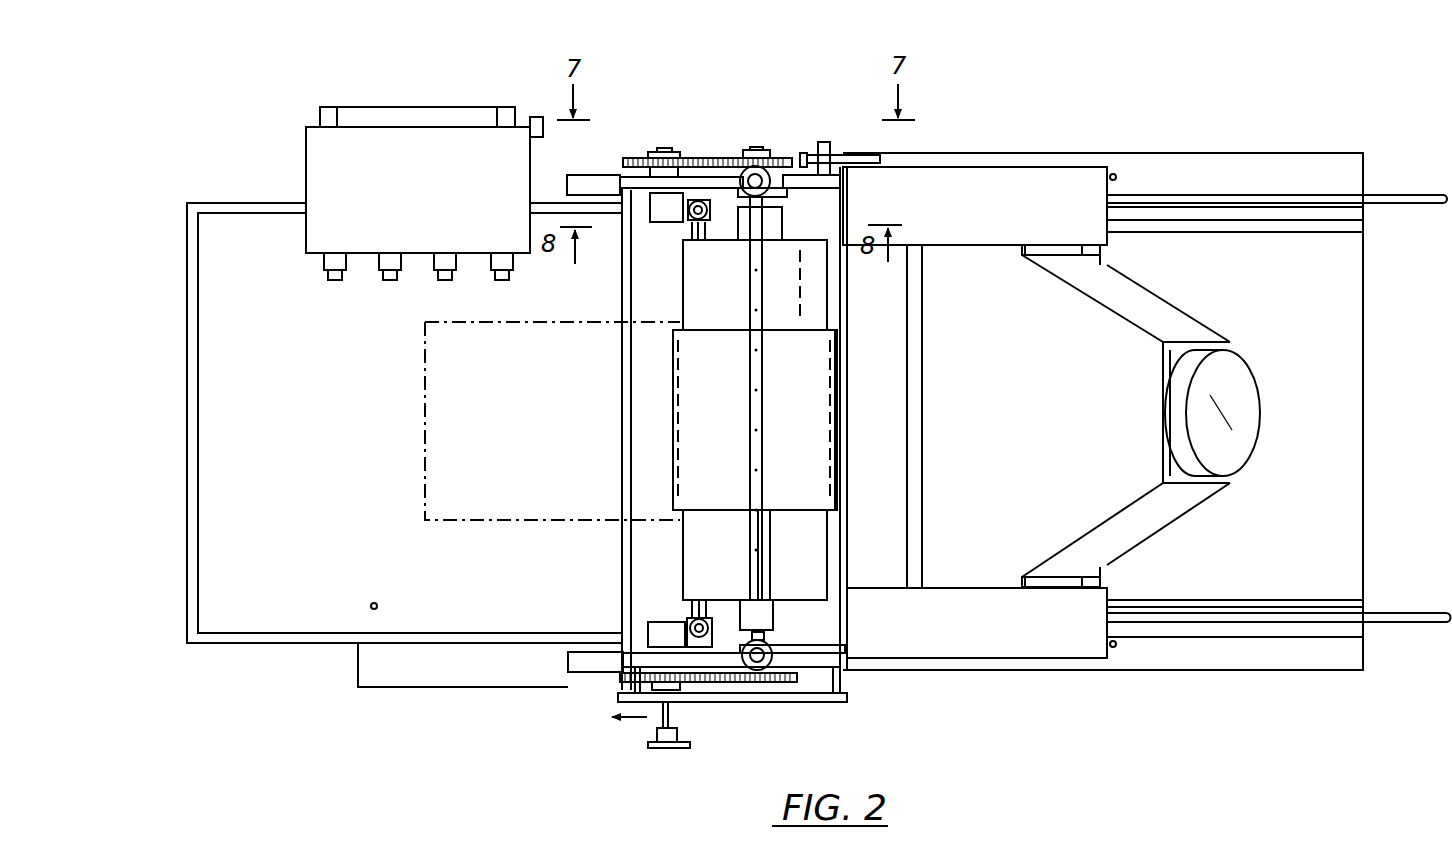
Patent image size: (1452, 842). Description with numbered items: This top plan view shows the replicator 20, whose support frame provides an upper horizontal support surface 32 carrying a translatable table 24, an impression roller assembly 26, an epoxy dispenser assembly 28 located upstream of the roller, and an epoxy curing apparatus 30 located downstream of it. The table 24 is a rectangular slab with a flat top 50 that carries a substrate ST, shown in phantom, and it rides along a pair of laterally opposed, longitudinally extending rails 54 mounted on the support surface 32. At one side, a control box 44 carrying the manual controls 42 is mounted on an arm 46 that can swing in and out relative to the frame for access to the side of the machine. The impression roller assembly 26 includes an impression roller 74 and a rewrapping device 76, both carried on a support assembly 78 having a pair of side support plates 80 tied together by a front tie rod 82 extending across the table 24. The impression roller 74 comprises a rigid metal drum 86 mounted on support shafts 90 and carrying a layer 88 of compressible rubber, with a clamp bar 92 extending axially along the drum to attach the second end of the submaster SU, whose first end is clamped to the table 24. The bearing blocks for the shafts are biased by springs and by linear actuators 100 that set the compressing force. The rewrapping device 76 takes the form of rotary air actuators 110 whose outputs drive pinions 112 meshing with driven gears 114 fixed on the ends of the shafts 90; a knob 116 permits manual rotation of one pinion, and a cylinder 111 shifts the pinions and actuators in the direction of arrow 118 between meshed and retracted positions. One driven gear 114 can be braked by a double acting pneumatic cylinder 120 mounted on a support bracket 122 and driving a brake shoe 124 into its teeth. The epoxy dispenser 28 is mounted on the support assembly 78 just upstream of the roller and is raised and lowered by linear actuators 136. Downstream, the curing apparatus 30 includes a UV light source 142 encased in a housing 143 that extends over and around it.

The replicator 20 is at (1232, 62).
The translatable table 24 is at (243, 620).
The impression roller assembly 26 is at (840, 238).
The epoxy dispenser assembly 28 is at (686, 229).
The epoxy curing apparatus 30 is at (1027, 662).
The upper horizontal support surface 32 is at (1208, 650).
The manual controls 42 is at (386, 272).
The control box 44 is at (304, 157).
The arm 46 is at (537, 116).
The flat top 50 is at (250, 325).
The rails 54 is at (1328, 234).
The impression roller 74 is at (845, 540).
The rewrapping device 76 is at (584, 174).
The support assembly 78 is at (796, 648).
The side support plates 80 is at (832, 181).
The front tie rod 82 is at (621, 452).
The rigid metal drum 86 is at (703, 292).
The layer of compressible material 88 is at (824, 341).
The support shafts 90 is at (758, 149).
The clamp bar 92 is at (760, 246).
The linear actuator 100 is at (767, 168).
The rotary air actuators 110 is at (656, 207).
The cylinder 111 is at (600, 176).
The pinion 112 is at (677, 160).
The driven gear 114 is at (727, 158).
The knob 116 is at (658, 752).
The arrow 118 is at (647, 722).
The double acting pneumatic cylinder 120 is at (860, 156).
The support bracket 122 is at (828, 143).
The brake shoe 124 is at (806, 158).
The linear actuators 136 is at (698, 200).
The UV light source 142 is at (1240, 377).
The housing 143 is at (1145, 306).
The substrate ST is at (452, 523).
The submaster SU is at (675, 370).